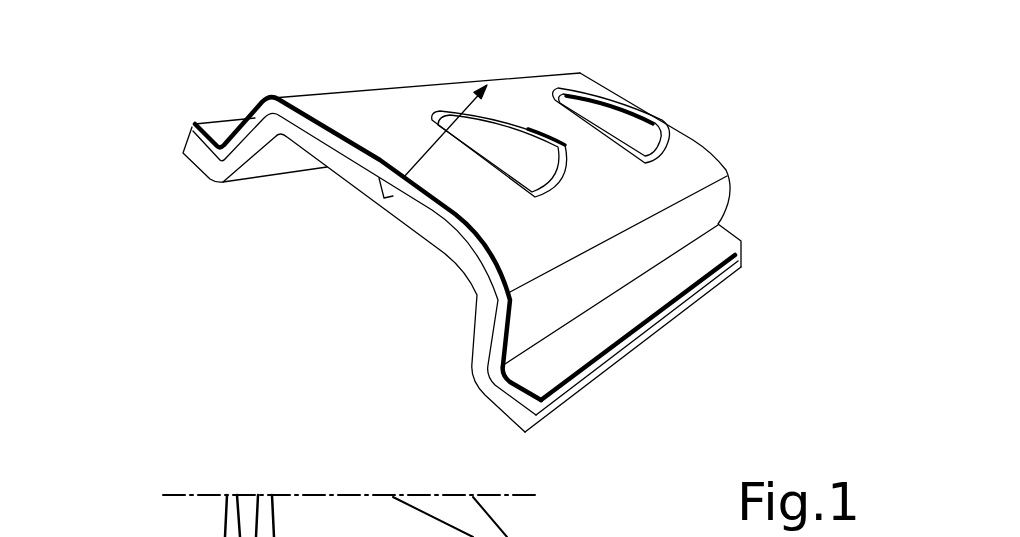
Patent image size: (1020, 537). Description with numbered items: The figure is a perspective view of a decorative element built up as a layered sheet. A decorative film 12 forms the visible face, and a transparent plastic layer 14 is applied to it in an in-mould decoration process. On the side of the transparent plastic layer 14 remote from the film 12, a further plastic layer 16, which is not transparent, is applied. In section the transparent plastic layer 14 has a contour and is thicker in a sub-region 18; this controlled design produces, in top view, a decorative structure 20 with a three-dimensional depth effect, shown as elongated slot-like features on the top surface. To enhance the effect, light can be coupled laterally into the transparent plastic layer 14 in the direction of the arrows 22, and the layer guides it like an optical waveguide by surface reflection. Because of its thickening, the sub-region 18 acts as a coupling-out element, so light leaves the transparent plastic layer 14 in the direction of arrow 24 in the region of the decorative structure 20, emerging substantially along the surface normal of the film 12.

The film 12 is at (683, 153).
The transparent plastic layer 14 is at (492, 350).
The further plastic layer 16 is at (493, 394).
The sub-region 18 is at (388, 199).
The decorative structure 20 is at (504, 120).
The arrows 22 is at (185, 92).
The arrow 24 is at (434, 143).